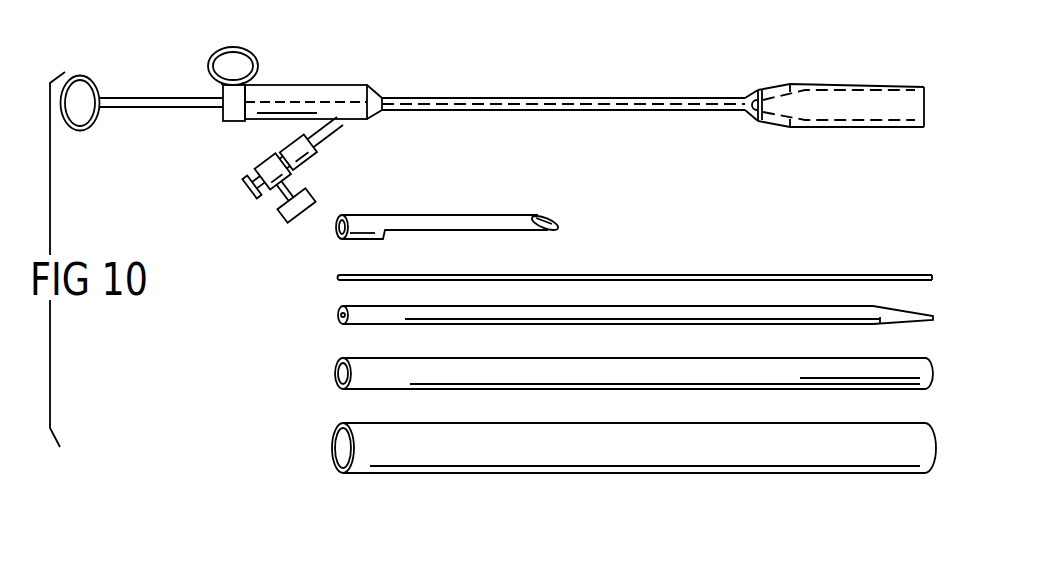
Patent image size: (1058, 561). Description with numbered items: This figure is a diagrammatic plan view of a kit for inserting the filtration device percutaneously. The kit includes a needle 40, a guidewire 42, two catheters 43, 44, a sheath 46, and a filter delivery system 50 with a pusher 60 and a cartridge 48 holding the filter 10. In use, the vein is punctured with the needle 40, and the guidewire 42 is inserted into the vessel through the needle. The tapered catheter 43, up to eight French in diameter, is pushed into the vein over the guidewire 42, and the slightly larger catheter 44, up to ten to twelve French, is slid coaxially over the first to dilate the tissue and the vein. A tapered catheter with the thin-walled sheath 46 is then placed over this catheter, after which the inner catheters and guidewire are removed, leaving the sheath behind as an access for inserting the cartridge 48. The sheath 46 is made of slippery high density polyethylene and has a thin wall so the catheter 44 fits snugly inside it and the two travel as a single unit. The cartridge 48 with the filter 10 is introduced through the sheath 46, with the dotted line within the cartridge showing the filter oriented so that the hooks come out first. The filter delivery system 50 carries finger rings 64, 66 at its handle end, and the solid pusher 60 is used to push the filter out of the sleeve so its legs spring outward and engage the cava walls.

The filter 10 is at (805, 91).
The needle 40 is at (539, 218).
The guidewire 42 is at (688, 276).
The tapered catheter 43 is at (336, 316).
The catheter 44 is at (335, 373).
The sheath 46 is at (333, 447).
The cartridge 48 is at (923, 87).
The filter delivery system 50 is at (365, 85).
The pusher 60 is at (505, 103).
The finger ring 64 is at (88, 75).
The thumb ring 66 is at (207, 65).